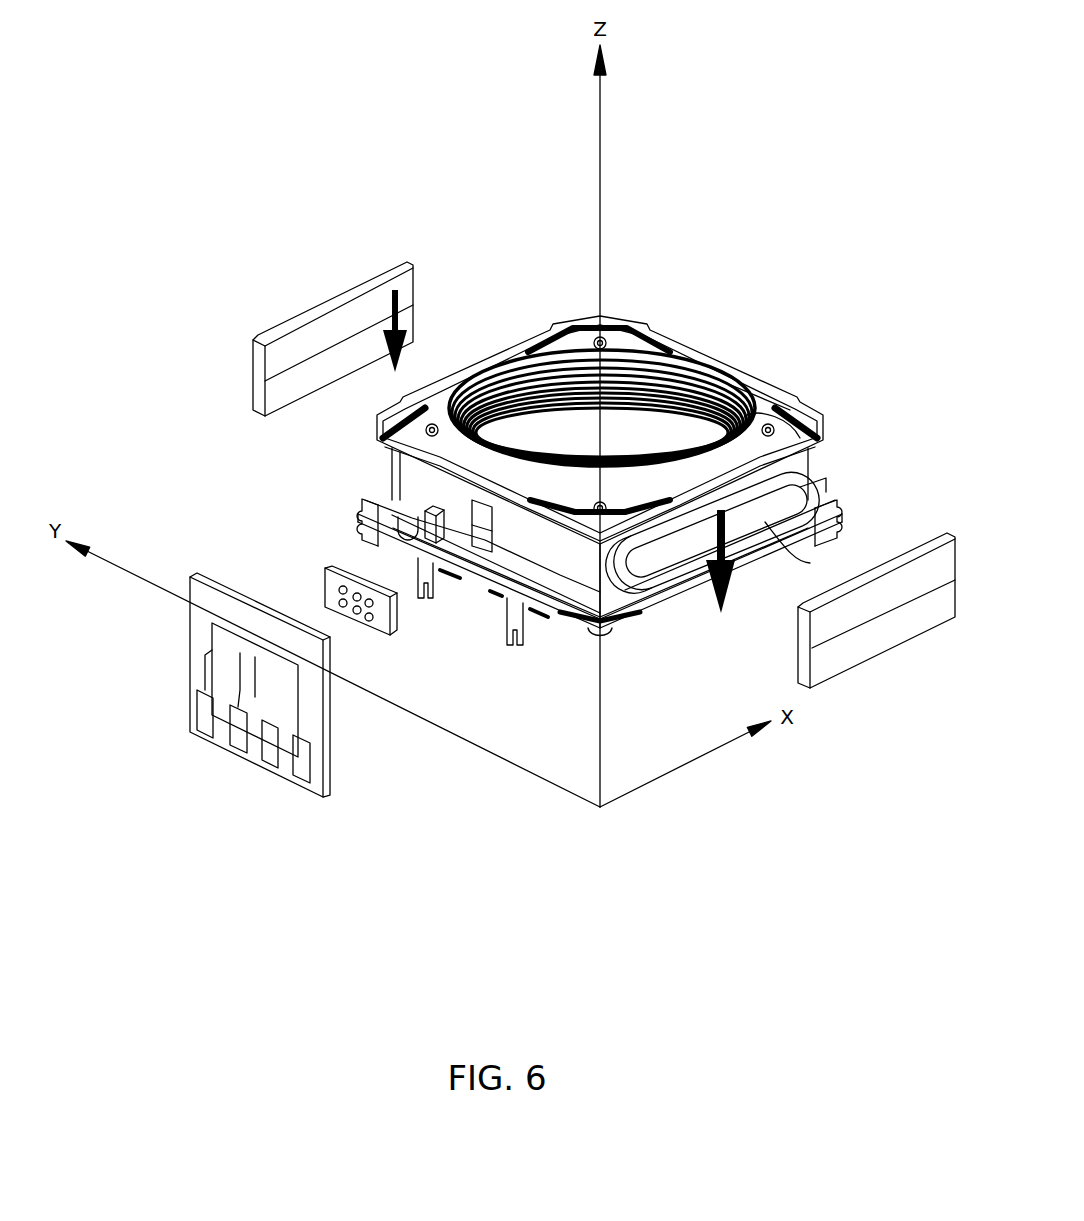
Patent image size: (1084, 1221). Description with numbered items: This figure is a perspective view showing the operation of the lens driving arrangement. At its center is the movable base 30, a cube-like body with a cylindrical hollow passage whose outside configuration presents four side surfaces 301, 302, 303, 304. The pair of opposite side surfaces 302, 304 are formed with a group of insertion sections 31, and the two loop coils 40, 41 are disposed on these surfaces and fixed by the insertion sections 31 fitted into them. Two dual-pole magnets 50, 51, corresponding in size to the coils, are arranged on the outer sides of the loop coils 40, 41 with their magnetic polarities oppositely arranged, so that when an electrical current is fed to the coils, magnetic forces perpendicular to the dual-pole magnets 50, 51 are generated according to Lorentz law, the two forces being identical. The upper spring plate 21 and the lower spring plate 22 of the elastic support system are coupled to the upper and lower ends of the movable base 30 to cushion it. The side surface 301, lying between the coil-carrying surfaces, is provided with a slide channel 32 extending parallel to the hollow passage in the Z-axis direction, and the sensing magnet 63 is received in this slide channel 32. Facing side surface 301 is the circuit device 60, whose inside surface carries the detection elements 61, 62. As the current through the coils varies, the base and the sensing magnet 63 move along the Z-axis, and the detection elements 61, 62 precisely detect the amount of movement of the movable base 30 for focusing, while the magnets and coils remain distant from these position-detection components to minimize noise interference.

The upper spring plate 21 is at (800, 408).
The lower spring plate 22 is at (837, 497).
The movable base 30 is at (700, 342).
The side surface 301 is at (545, 578).
The side surface 302 is at (628, 605).
The side surface 303 is at (730, 372).
The side surface 304 is at (395, 482).
The insertion sections 31 is at (818, 490).
The slide channel 32 is at (485, 510).
The loop coil 40 is at (645, 605).
The loop coil 41 is at (388, 464).
The dual-pole magnet 50 is at (847, 668).
The dual-pole magnet 51 is at (357, 285).
The circuit device 60 is at (205, 690).
The detection element 61 is at (325, 588).
The detection element 62 is at (424, 520).
The sensing magnet 63 is at (482, 545).